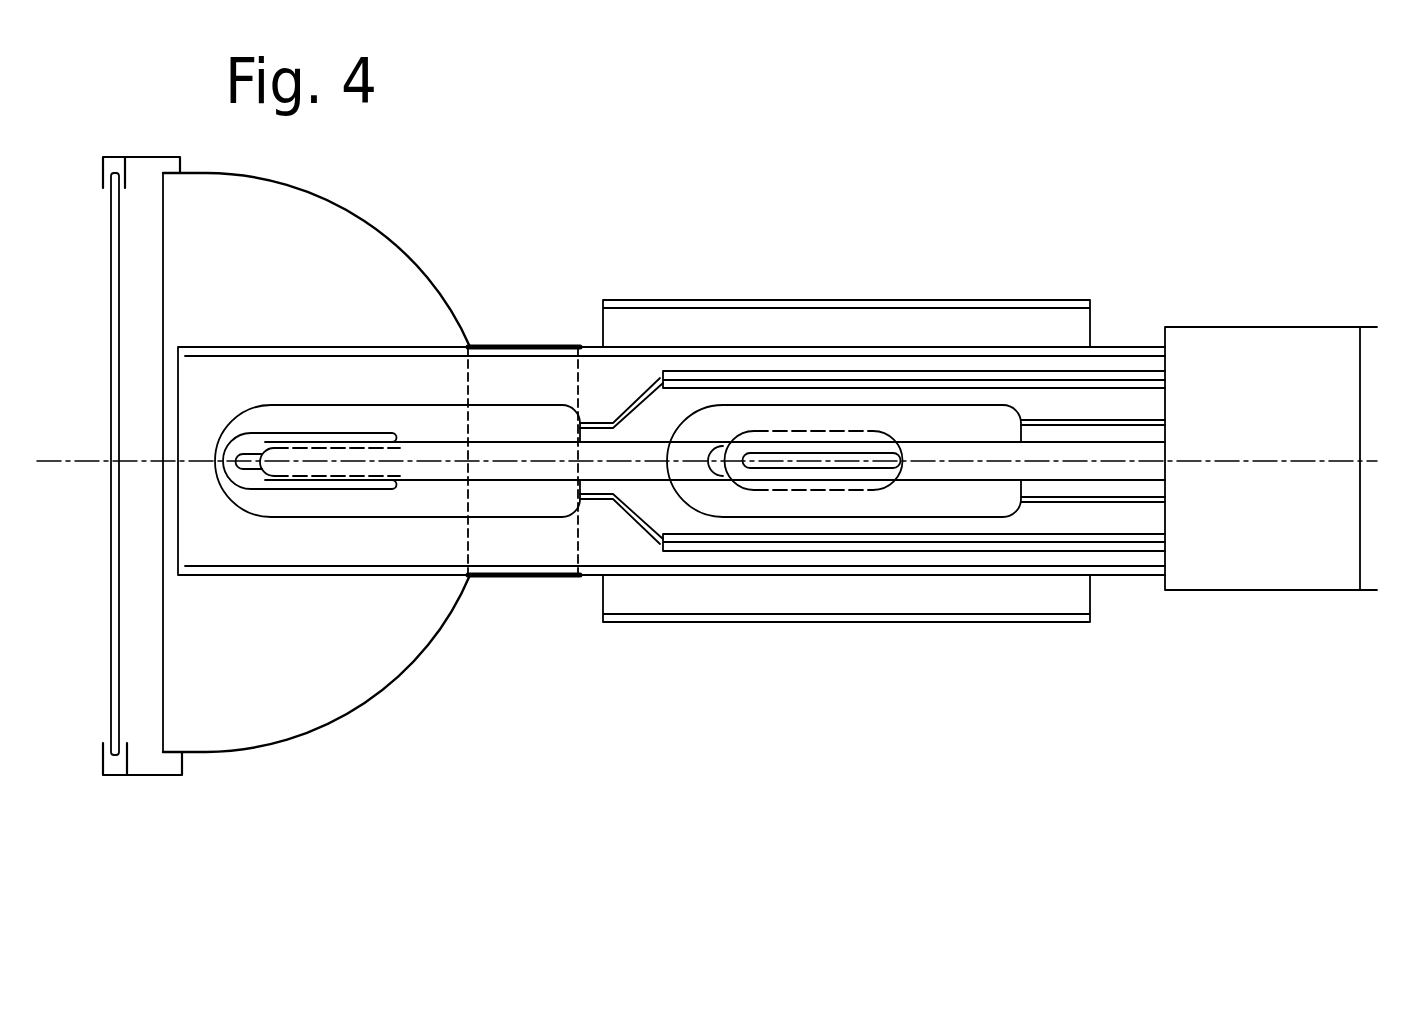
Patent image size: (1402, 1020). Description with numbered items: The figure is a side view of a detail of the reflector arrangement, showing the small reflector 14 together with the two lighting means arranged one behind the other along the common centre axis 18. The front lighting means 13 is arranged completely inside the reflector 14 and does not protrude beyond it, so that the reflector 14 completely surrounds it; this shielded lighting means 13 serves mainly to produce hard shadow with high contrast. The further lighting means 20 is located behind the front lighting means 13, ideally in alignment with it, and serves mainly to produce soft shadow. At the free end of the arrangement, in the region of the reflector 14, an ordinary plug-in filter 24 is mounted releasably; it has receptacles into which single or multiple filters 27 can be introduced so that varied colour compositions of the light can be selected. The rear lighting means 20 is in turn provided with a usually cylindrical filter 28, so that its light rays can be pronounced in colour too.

The lighting means 13 is at (335, 522).
The reflector 14 is at (358, 220).
The centre axis 18 is at (1208, 458).
The lighting means 20 is at (862, 515).
The plug-in filter 24 is at (167, 777).
The filter 27 is at (110, 302).
The cylindrical filter 28 is at (870, 300).